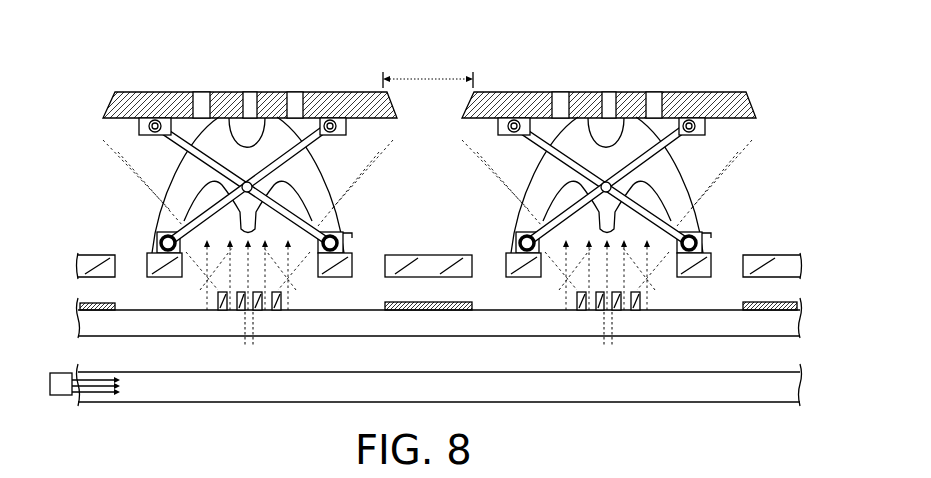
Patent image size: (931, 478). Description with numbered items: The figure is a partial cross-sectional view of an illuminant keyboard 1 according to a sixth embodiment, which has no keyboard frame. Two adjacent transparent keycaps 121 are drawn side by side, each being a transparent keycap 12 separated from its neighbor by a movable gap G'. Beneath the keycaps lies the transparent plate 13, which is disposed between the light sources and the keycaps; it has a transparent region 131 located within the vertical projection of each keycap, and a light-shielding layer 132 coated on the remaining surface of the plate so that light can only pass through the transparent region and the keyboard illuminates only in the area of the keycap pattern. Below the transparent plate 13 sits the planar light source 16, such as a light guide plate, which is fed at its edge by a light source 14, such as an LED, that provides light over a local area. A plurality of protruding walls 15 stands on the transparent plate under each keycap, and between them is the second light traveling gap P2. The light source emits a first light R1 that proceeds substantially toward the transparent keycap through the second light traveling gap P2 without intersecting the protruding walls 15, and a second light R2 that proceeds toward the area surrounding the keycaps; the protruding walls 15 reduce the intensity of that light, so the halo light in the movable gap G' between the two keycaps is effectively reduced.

The illuminant keyboard 1 is at (67, 63).
The transparent keycap 12 is at (380, 104).
The transparent keycaps 121 is at (284, 92).
The second light R2 is at (431, 139).
The first light R1 is at (442, 212).
The transparent plate 13 is at (777, 327).
The transparent region 131 is at (330, 305).
The light-shielding layer 132 is at (435, 302).
The protruding walls 15 is at (282, 298).
The second light traveling gap P2 is at (427, 341).
The planar light source 16 is at (708, 377).
The light source 14 is at (52, 373).
The movable gap G' is at (428, 70).